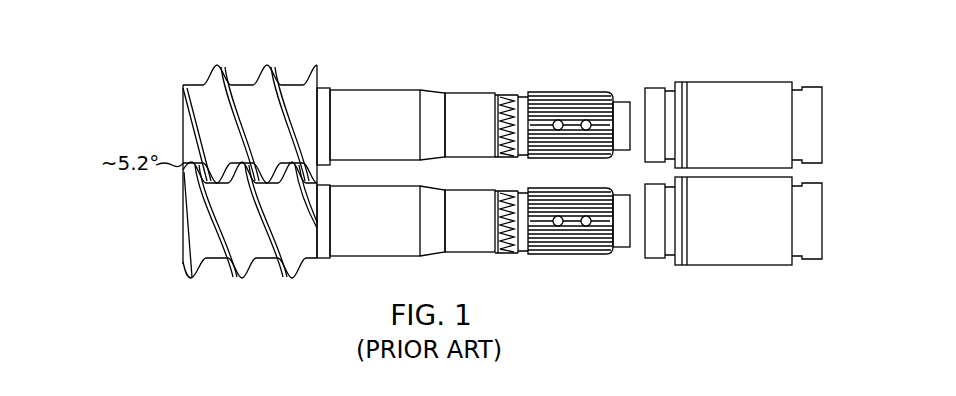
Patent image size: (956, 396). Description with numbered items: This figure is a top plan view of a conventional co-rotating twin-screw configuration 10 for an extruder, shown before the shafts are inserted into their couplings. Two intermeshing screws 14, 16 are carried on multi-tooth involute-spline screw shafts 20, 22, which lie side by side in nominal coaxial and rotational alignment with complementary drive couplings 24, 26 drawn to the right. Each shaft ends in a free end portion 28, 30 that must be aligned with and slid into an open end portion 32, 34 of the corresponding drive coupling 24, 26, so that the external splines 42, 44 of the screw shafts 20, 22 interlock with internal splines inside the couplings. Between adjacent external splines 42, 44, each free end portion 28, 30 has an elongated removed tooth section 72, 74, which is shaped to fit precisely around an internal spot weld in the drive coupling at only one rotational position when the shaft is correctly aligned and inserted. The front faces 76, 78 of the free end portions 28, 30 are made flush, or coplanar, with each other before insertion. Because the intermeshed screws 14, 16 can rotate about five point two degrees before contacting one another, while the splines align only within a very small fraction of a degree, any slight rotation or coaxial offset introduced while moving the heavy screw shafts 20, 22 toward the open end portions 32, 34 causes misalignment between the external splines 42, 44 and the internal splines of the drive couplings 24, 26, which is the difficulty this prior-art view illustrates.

The co-rotating twin-screw configuration 10 is at (138, 72).
The intermeshing screw 14 is at (183, 90).
The intermeshing screw 16 is at (183, 258).
The screw shaft 20 is at (340, 90).
The screw shaft 22 is at (333, 258).
The drive coupling 24 is at (732, 82).
The drive coupling 26 is at (730, 265).
The free end portion 28 is at (588, 93).
The free end portion 30 is at (556, 253).
The open end portion 32 is at (645, 88).
The open end portion 34 is at (645, 258).
The external splines 42 is at (562, 80).
The external splines 44 is at (542, 268).
The removed tooth section 72 is at (548, 122).
The removed tooth section 74 is at (540, 224).
The front face 76 is at (634, 136).
The front face 78 is at (632, 238).